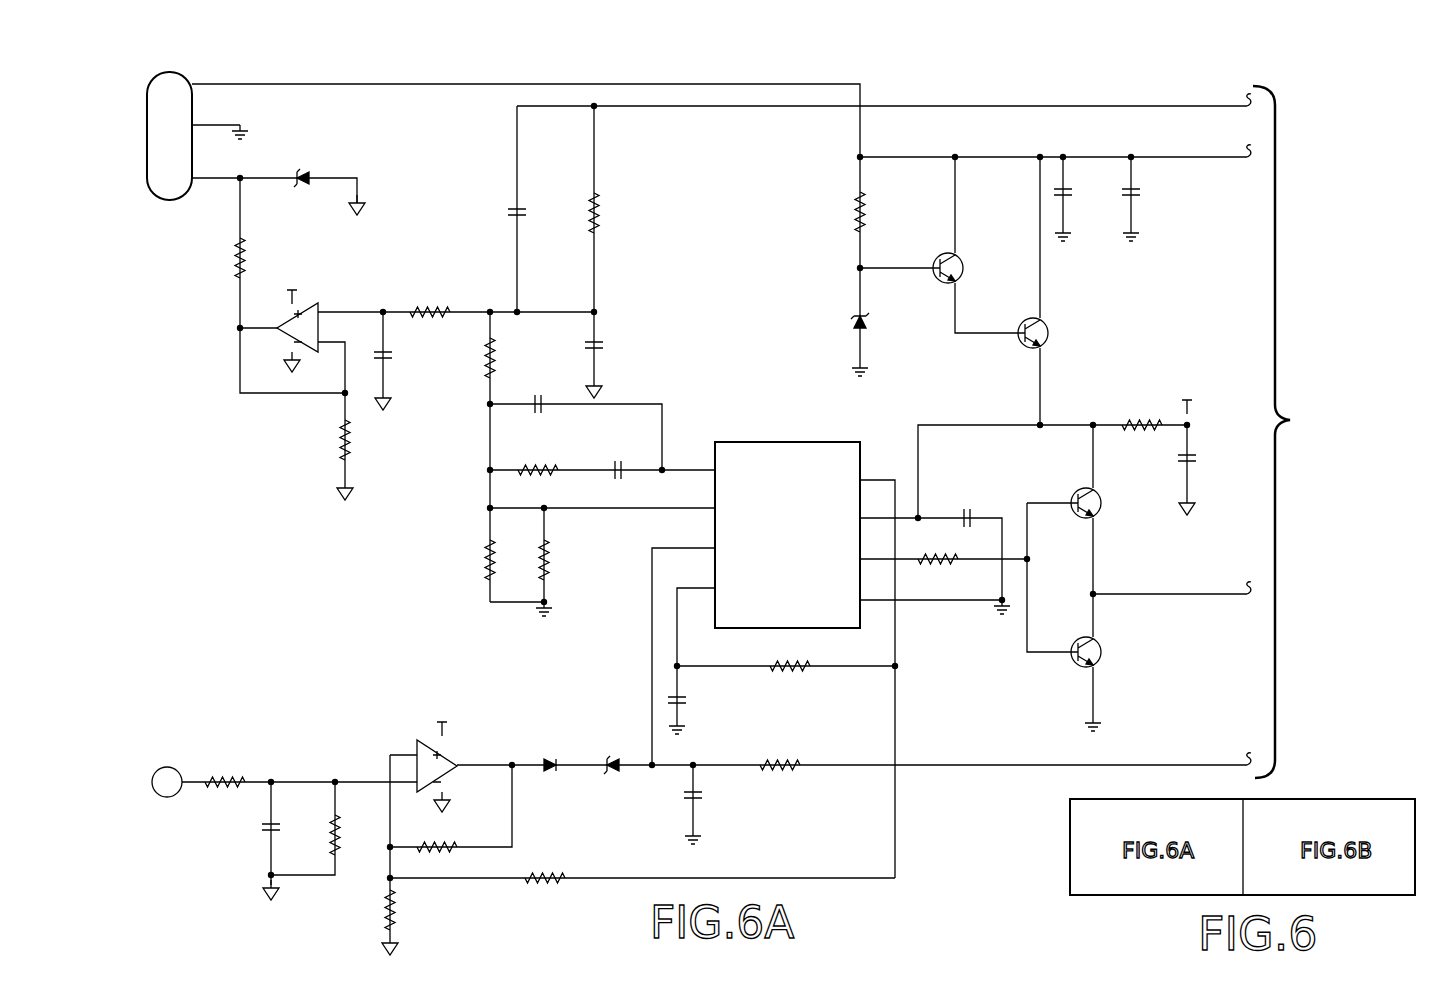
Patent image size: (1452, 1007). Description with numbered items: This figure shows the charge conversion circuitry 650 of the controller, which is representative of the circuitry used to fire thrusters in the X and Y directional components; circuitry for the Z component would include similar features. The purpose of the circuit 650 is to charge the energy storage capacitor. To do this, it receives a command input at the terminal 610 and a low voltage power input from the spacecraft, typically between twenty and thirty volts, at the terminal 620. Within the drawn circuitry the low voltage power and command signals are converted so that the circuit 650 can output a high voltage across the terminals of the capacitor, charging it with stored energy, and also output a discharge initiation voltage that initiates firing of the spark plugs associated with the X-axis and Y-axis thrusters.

The terminal 610 is at (156, 766).
The terminal 620 is at (167, 200).
The charge conversion circuitry 650 is at (1019, 88).